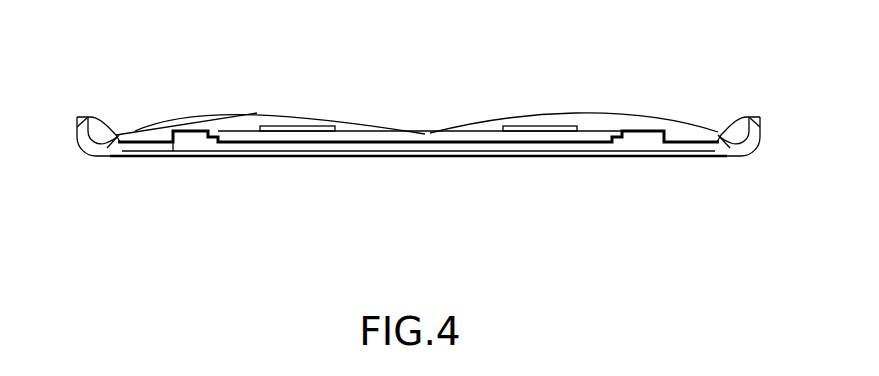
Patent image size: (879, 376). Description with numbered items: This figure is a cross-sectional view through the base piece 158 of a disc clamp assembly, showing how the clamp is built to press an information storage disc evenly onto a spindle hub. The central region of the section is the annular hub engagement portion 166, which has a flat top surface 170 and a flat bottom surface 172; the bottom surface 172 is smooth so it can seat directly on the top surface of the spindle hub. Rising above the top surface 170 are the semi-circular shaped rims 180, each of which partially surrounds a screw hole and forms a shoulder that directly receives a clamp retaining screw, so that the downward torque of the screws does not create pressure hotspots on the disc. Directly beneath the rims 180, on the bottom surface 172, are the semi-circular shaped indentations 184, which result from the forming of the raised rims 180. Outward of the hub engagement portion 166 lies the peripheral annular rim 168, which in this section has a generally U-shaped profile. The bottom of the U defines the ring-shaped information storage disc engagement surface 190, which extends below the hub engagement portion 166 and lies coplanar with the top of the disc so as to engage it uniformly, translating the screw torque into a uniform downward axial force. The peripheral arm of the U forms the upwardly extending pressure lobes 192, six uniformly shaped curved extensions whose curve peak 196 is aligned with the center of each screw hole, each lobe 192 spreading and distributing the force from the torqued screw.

The base piece 158 is at (480, 140).
The annular hub engagement portion 166 is at (617, 130).
The peripheral annular rim 168 is at (753, 157).
The top surface 170 is at (228, 137).
The bottom surface 172 is at (222, 151).
The semi-circular shaped rim 180 is at (212, 133).
The semi-circular shaped indentation 184 is at (207, 156).
The information storage disc engagement surface 190 is at (98, 157).
The pressure lobe 192 is at (763, 125).
The curve peak 196 is at (262, 112).